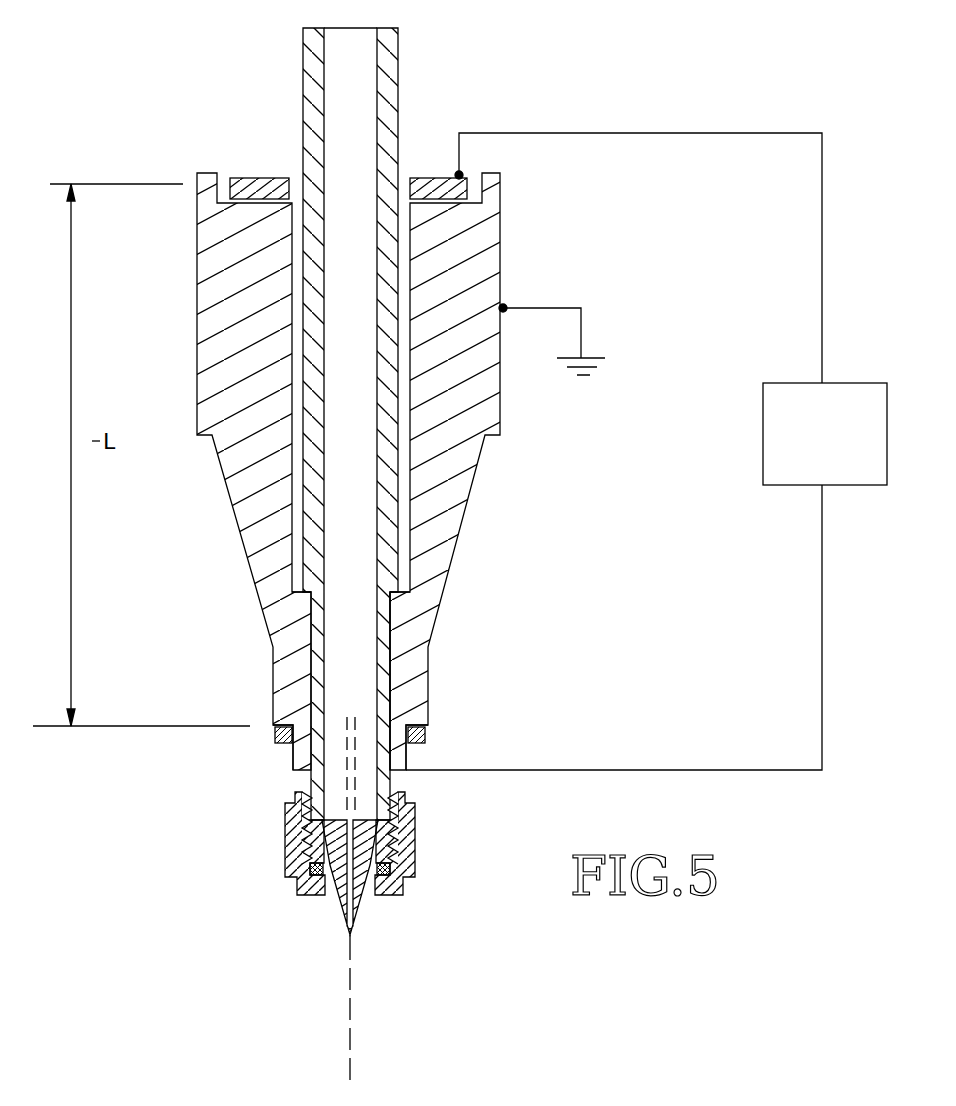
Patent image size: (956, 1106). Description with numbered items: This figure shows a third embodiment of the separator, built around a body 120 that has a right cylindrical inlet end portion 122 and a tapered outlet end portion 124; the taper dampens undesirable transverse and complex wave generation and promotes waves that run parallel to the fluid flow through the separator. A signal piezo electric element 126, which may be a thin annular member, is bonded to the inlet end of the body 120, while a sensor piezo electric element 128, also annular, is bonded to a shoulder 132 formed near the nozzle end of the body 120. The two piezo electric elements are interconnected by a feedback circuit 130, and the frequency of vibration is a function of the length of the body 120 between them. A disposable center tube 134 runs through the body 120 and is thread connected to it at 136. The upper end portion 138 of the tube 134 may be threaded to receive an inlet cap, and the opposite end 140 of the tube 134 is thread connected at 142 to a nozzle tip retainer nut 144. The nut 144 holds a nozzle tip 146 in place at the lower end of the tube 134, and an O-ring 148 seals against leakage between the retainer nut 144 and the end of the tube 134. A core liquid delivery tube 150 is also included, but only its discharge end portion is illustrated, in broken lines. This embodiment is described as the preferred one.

The body 120 is at (316, 471).
The right cylindrical inlet end portion 122 is at (197, 272).
The tapered outlet end portion 124 is at (242, 542).
The signal piezo electric element 126 is at (258, 178).
The sensor piezo electric element 128 is at (283, 748).
The feedback circuit 130 is at (806, 438).
The shoulder 132 is at (275, 733).
The disposable center tube 134 is at (390, 75).
The thread connection 136 is at (390, 645).
The upper end portion 138 is at (307, 47).
The opposite end 140 is at (300, 810).
The thread connection 142 is at (397, 838).
The nozzle tip retainer nut 144 is at (417, 867).
The nozzle tip 146 is at (360, 900).
The O-ring 148 is at (322, 897).
The core liquid delivery tube 150 is at (370, 785).